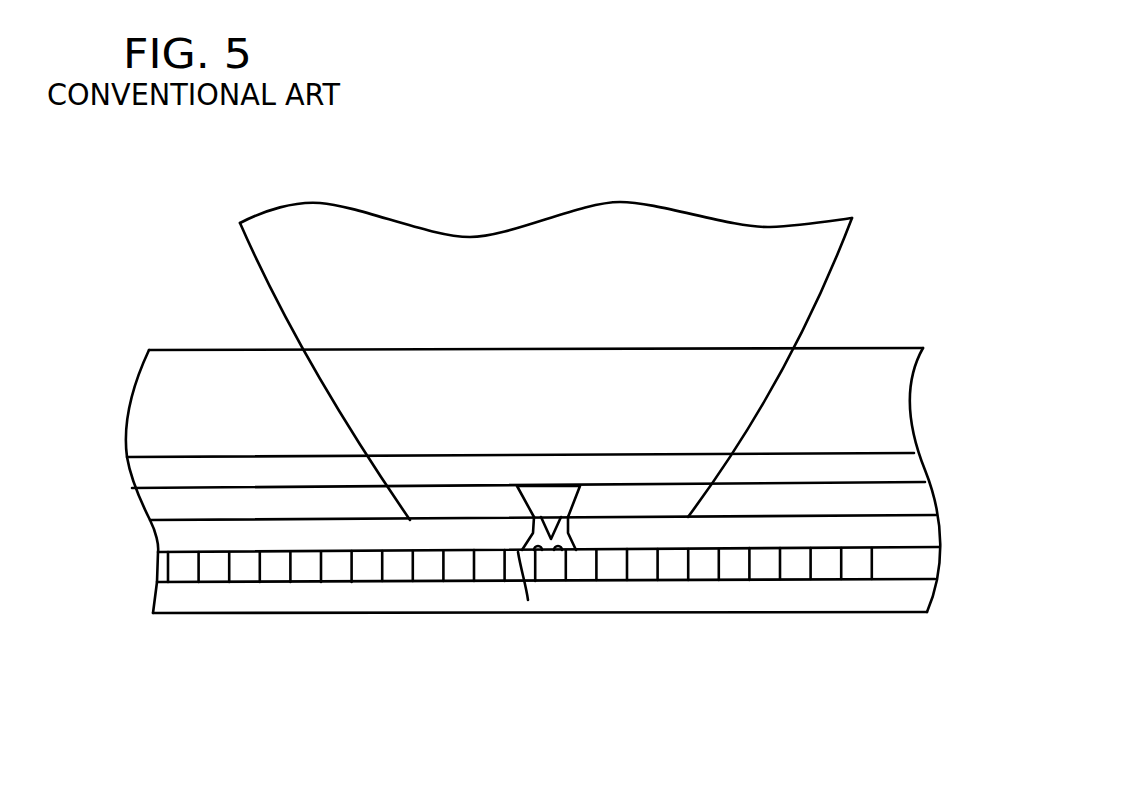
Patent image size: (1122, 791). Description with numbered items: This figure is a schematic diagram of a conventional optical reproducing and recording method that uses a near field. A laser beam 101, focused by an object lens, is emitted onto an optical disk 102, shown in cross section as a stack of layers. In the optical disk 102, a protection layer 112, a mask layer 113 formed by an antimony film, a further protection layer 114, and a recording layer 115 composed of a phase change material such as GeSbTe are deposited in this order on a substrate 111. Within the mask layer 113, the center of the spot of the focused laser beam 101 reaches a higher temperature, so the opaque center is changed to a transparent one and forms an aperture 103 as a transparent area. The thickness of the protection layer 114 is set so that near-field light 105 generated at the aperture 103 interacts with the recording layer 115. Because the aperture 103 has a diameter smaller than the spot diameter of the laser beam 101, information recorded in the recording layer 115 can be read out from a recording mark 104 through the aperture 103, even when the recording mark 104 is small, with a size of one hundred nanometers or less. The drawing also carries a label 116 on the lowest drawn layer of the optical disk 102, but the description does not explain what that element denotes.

The laser beam 101 is at (822, 263).
The optical disk 102 is at (956, 341).
The aperture 103 is at (548, 502).
The recording mark 104 is at (490, 573).
The near-field light 105 is at (528, 600).
The substrate 111 is at (902, 387).
The protection layer 112 is at (908, 467).
The mask layer 113 is at (925, 498).
The protection layer 114 is at (918, 530).
The recording layer 115 is at (918, 568).
The sixth layer 116 is at (910, 596).